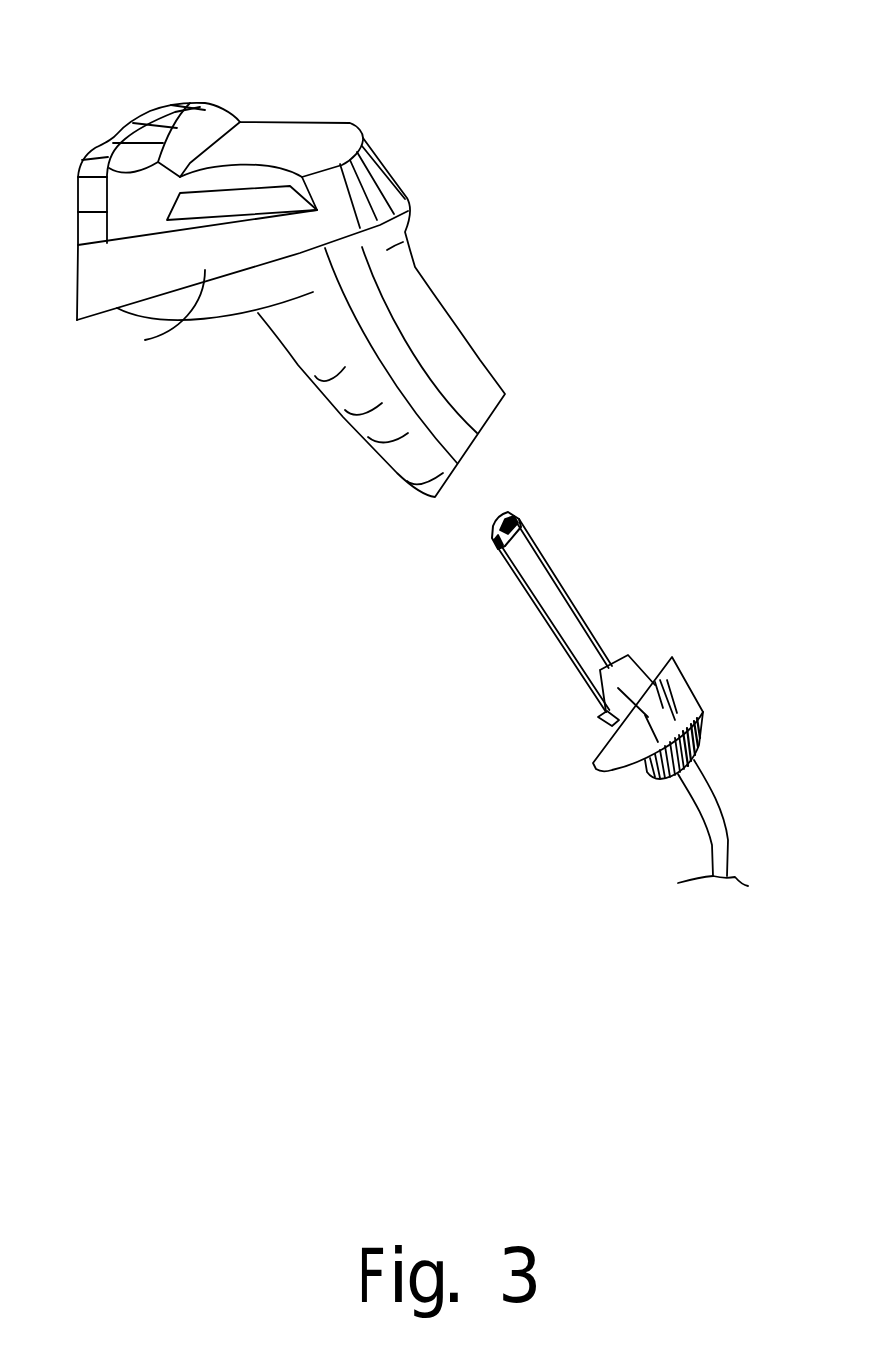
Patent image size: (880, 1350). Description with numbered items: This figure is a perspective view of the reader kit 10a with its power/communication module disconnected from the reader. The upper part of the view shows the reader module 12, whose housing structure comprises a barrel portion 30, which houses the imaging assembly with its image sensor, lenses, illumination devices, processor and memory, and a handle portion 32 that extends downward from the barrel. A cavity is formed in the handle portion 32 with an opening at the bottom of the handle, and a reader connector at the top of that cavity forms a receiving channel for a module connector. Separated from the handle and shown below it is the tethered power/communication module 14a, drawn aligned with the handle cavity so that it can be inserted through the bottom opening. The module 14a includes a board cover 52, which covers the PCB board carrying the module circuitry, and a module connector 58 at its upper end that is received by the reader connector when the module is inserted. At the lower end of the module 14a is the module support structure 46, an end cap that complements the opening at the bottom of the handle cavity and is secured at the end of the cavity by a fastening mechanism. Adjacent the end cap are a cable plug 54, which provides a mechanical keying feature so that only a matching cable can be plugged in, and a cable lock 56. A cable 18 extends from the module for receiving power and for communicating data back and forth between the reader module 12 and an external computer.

The reader kit 10a is at (360, 96).
The reader module 12 is at (318, 328).
The barrel portion 30 is at (145, 340).
The handle portion 32 is at (407, 447).
The tethered power/communication module 14a is at (608, 585).
The board cover 52 is at (570, 657).
The module connector 58 is at (517, 519).
The cable plug 54 is at (633, 678).
The module support structure 46 is at (691, 699).
The cable lock 56 is at (646, 762).
The cable 18 is at (717, 820).